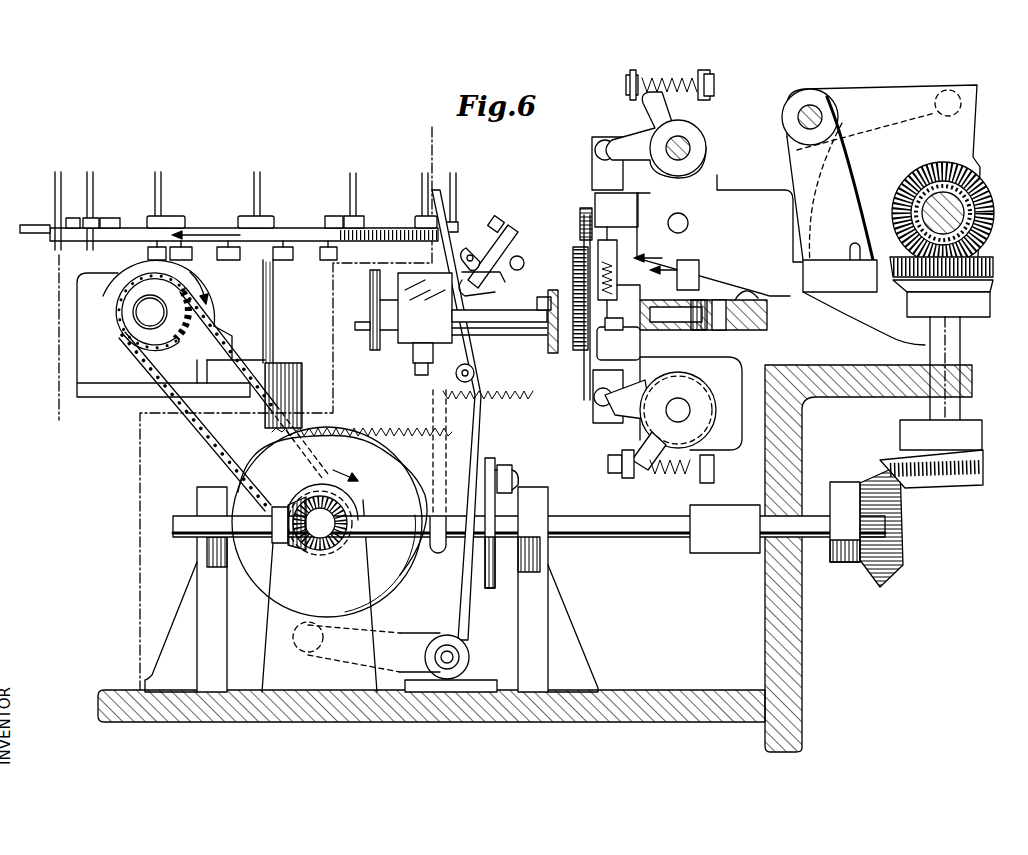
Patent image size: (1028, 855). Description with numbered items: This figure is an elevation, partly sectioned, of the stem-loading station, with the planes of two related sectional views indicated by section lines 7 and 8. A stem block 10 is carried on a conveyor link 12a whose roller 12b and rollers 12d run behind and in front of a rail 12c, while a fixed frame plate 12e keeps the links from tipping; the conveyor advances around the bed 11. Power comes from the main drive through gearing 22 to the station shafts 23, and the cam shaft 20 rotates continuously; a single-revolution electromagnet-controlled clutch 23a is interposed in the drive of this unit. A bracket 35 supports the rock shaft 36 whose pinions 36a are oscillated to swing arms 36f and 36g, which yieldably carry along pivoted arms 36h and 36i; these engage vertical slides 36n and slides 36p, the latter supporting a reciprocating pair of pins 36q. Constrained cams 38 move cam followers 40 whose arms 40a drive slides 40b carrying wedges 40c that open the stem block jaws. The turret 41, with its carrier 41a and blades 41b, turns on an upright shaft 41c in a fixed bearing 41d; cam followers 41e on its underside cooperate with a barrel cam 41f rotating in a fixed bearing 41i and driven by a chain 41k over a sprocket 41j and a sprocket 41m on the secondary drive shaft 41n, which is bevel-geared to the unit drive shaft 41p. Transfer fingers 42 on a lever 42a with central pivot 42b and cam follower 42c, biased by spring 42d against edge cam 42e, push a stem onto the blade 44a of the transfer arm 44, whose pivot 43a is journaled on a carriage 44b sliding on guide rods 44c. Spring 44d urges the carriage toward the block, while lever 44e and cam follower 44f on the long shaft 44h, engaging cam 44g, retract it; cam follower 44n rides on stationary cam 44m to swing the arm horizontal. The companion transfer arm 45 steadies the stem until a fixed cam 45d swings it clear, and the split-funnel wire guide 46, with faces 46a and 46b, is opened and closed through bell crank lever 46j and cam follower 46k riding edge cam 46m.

The section line 7- 7 is at (52, 263).
The section line 8- 8 is at (424, 145).
The stem block 10 is at (652, 259).
The bed 11 is at (765, 620).
The link 12a is at (698, 332).
The roller 12b is at (720, 332).
The rail 12c is at (672, 330).
The rollers 12d is at (637, 288).
The fixed frame plate 12e is at (748, 290).
The cam shaft 20 is at (905, 188).
The gearing 22 is at (905, 282).
The shafts 23 is at (828, 540).
The single-revolution electromagnet-controlled clutch 23a is at (745, 554).
The bracket 35 is at (720, 235).
The rock shaft 36 is at (692, 150).
The pinions 36a is at (617, 243).
The arms 36f is at (712, 100).
The arms 36g is at (700, 483).
The arms 36h is at (645, 100).
The arms 36i is at (630, 480).
The vertical slides 36n is at (592, 148).
The slides 36p is at (592, 400).
The pins 36q is at (618, 339).
The constrained cams 38 is at (883, 215).
The cam followers 40 is at (827, 174).
The arms 40a is at (827, 207).
The slides 40b is at (840, 276).
The wedges 40c is at (689, 275).
The turret 41 is at (212, 228).
The turret carrier 41a is at (274, 228).
The blade 41b is at (48, 226).
The upright shaft 41c is at (273, 330).
The fixed bearing 41d is at (295, 363).
The cam followers 41e is at (150, 252).
The barrel cam 41f is at (112, 262).
The fixed bearing 41i is at (171, 335).
The sprocket 41j is at (140, 333).
The chain 41k is at (150, 378).
The sprocket 41m is at (288, 505).
The secondary drive shaft 41n is at (318, 552).
The unit drive shaft 41p is at (412, 540).
The transfer fingers 42 is at (425, 226).
The lever 42a is at (465, 320).
The central pivot 42b is at (475, 374).
The cam follower 42c is at (443, 553).
The spring 42d is at (365, 430).
The edge cam 42e is at (332, 505).
The pivot 43a is at (467, 252).
The transfer arm 44 is at (512, 228).
The blade 44a is at (498, 218).
The carriage 44b is at (403, 322).
The guide rods 44c is at (520, 332).
The spring 44d is at (486, 398).
The lever 44e is at (467, 620).
The cam follower 44f is at (296, 648).
The cam 44g is at (270, 600).
The long shaft 44h is at (453, 657).
The stationary cam 44m is at (493, 290).
The cam follower 44n is at (494, 276).
The transfer arm 45 is at (519, 256).
The fixed cam 45d is at (545, 297).
The split-funnel wire guide 46 is at (586, 210).
The face 46a is at (580, 222).
The face 46b is at (616, 210).
The bell crank lever 46j is at (508, 470).
The cam follower 46k is at (485, 470).
The edge cam 46m is at (490, 458).